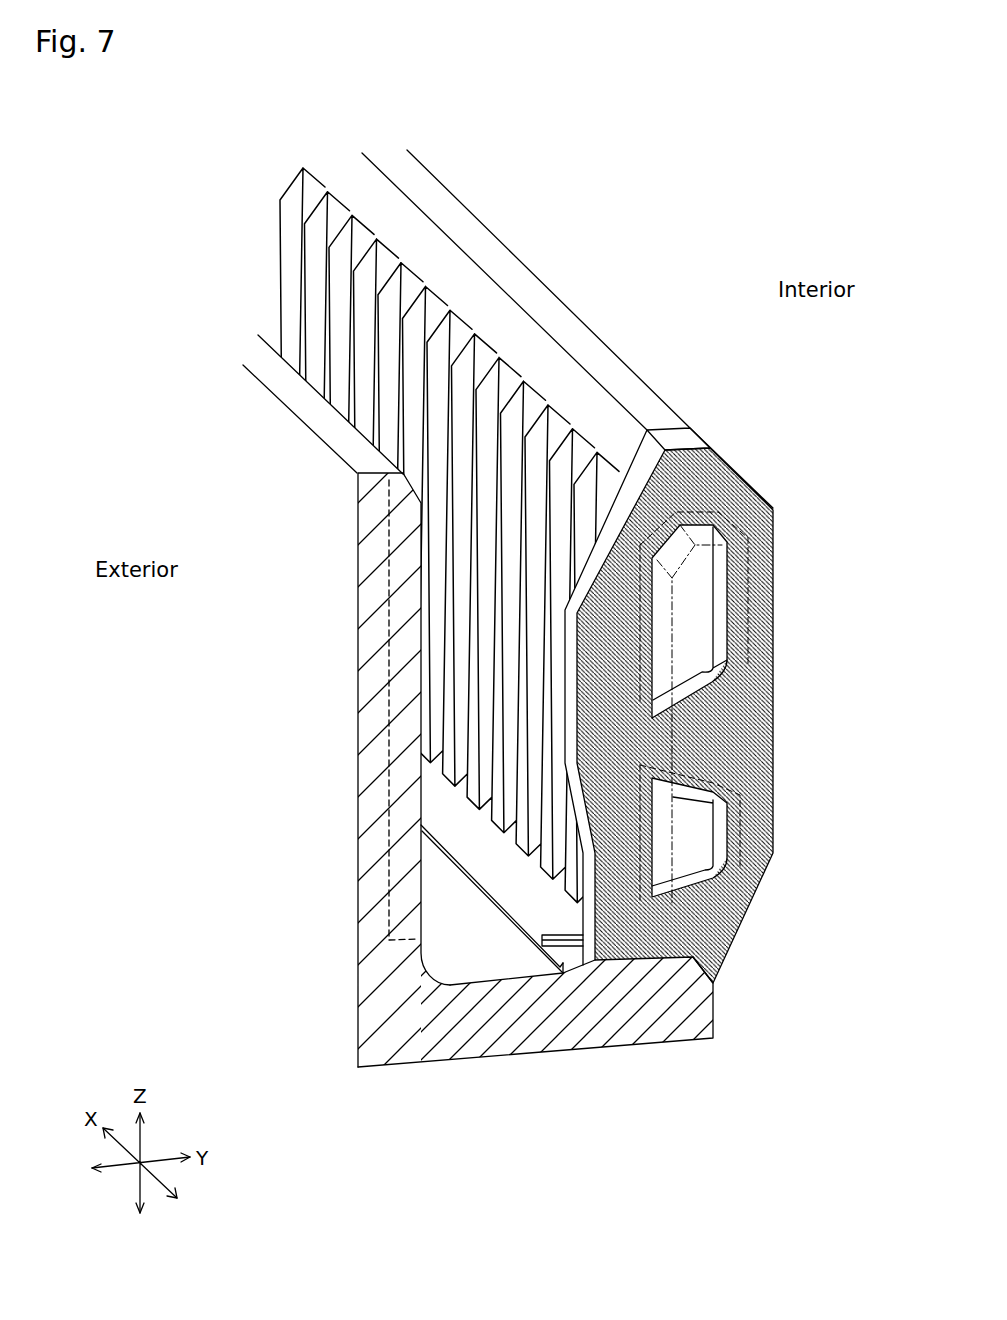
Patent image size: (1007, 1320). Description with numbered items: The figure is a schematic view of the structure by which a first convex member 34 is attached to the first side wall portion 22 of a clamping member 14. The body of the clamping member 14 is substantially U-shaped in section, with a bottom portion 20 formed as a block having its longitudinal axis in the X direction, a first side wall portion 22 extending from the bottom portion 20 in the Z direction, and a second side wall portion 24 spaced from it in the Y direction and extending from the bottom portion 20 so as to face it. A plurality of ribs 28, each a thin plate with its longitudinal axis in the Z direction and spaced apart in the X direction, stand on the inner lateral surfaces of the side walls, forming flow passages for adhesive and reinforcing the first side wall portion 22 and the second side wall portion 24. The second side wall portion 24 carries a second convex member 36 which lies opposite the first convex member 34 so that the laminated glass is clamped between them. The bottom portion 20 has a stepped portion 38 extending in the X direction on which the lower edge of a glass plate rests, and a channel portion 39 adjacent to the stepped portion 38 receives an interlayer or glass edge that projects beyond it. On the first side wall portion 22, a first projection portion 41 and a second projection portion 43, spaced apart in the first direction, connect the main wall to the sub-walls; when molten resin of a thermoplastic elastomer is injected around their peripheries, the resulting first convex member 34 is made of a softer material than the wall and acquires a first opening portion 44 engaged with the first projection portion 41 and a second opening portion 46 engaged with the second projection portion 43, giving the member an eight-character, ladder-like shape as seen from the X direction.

The clamping member 14 is at (436, 130).
The first side wall portion 22 is at (540, 300).
The ribs 28 is at (397, 345).
The second side wall portion 24 is at (302, 660).
The second convex member 36 is at (420, 763).
The bottom portion 20 is at (512, 1040).
The channel portion 39 is at (505, 945).
The stepped portion 38 is at (547, 926).
The first convex member 34 is at (743, 446).
The first projection portion 41 is at (745, 593).
The first opening portion 44 is at (722, 603).
The second projection portion 43 is at (745, 828).
The second opening portion 46 is at (725, 838).